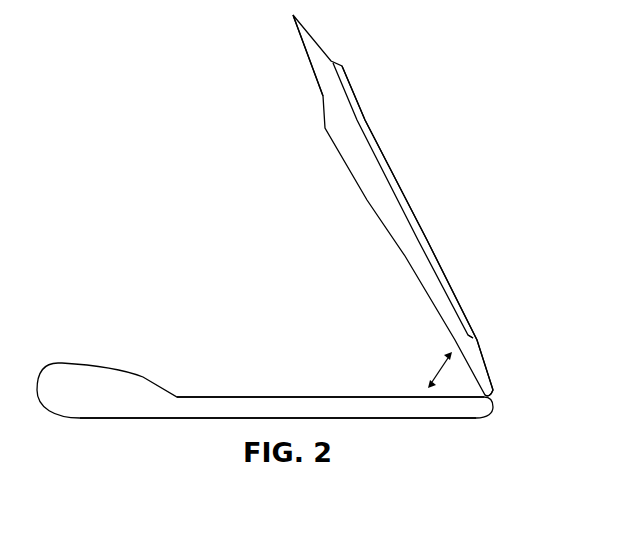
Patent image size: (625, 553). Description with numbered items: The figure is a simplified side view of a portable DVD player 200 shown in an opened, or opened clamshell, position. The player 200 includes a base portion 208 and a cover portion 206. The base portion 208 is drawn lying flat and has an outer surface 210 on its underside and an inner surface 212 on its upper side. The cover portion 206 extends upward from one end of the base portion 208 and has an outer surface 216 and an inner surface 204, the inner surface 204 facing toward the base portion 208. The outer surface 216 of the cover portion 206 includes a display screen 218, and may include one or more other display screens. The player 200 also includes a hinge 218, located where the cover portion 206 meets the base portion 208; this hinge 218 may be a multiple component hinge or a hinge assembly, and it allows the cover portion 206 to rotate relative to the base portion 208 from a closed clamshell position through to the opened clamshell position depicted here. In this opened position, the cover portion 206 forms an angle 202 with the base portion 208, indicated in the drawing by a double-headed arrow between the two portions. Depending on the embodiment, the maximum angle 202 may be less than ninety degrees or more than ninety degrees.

The portable DVD player 200 is at (161, 165).
The angle 202 is at (433, 372).
The inner surface of cover portion 204 is at (366, 198).
The cover portion 206 is at (318, 45).
The base portion 208 is at (182, 419).
The outer surface of base portion 210 is at (380, 420).
The inner surface of base portion 212 is at (226, 397).
The outer surface of cover portion 216 is at (483, 355).
The hinge 218 is at (477, 337).